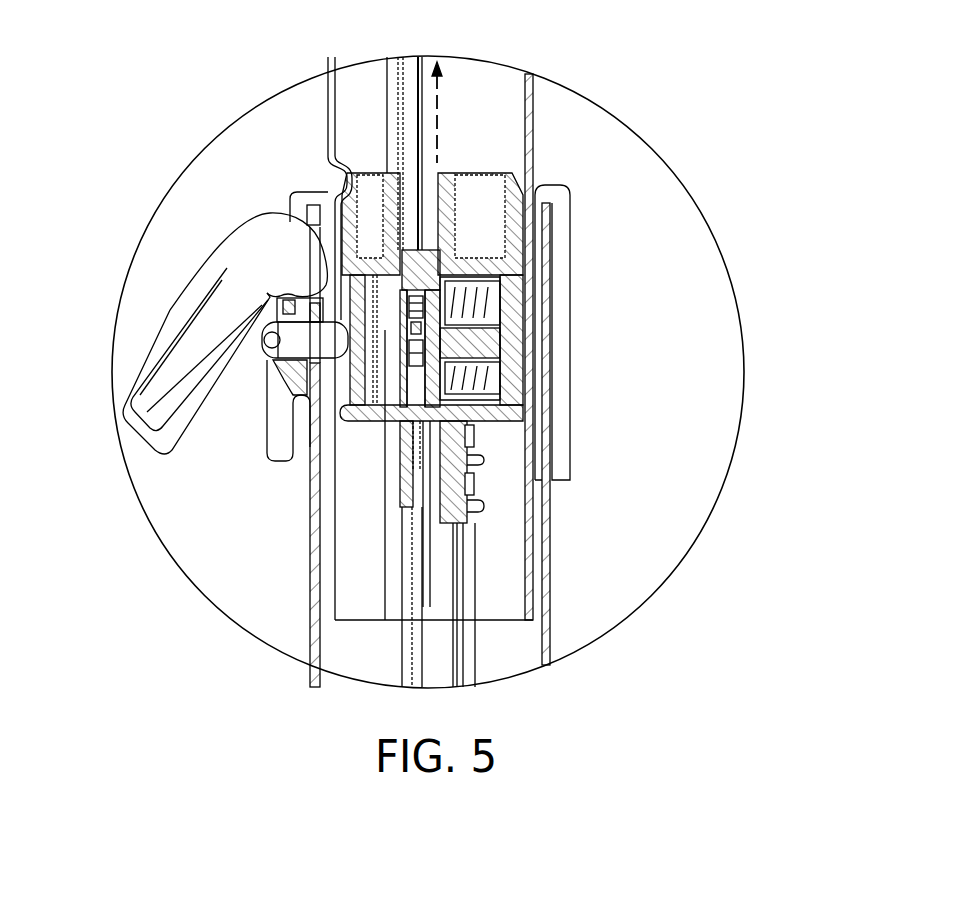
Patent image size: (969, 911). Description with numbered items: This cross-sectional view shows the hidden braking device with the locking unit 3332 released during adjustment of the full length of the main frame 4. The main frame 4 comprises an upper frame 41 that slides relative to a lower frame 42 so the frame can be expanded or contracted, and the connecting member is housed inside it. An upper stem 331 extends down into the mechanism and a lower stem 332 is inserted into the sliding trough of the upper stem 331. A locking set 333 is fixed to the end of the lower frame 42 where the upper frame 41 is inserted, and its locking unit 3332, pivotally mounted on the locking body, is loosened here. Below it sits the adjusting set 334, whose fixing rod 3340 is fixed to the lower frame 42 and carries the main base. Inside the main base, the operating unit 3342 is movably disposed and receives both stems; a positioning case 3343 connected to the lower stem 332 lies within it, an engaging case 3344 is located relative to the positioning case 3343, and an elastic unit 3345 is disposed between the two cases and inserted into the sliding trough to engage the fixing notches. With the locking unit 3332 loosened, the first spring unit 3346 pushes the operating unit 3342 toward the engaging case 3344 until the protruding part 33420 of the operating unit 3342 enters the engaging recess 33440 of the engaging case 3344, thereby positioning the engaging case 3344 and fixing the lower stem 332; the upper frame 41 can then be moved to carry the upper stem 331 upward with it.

The main frame 4 is at (308, 145).
The upper frame 41 is at (533, 138).
The lower frame 42 is at (310, 583).
The upper stem 331 is at (410, 112).
The lower stem 332 is at (413, 628).
The locking set 333 is at (216, 228).
The locking unit 3332 is at (210, 277).
The adjusting set 334 is at (500, 447).
The fixing rod 3340 is at (468, 597).
The operating unit 3342 is at (492, 350).
The protruding part 33420 is at (432, 340).
The positioning case 3343 is at (403, 350).
The engaging case 3344 is at (448, 267).
The engaging recess 33440 is at (434, 347).
The elastic unit 3345 is at (417, 353).
The first spring unit 3346 is at (490, 377).